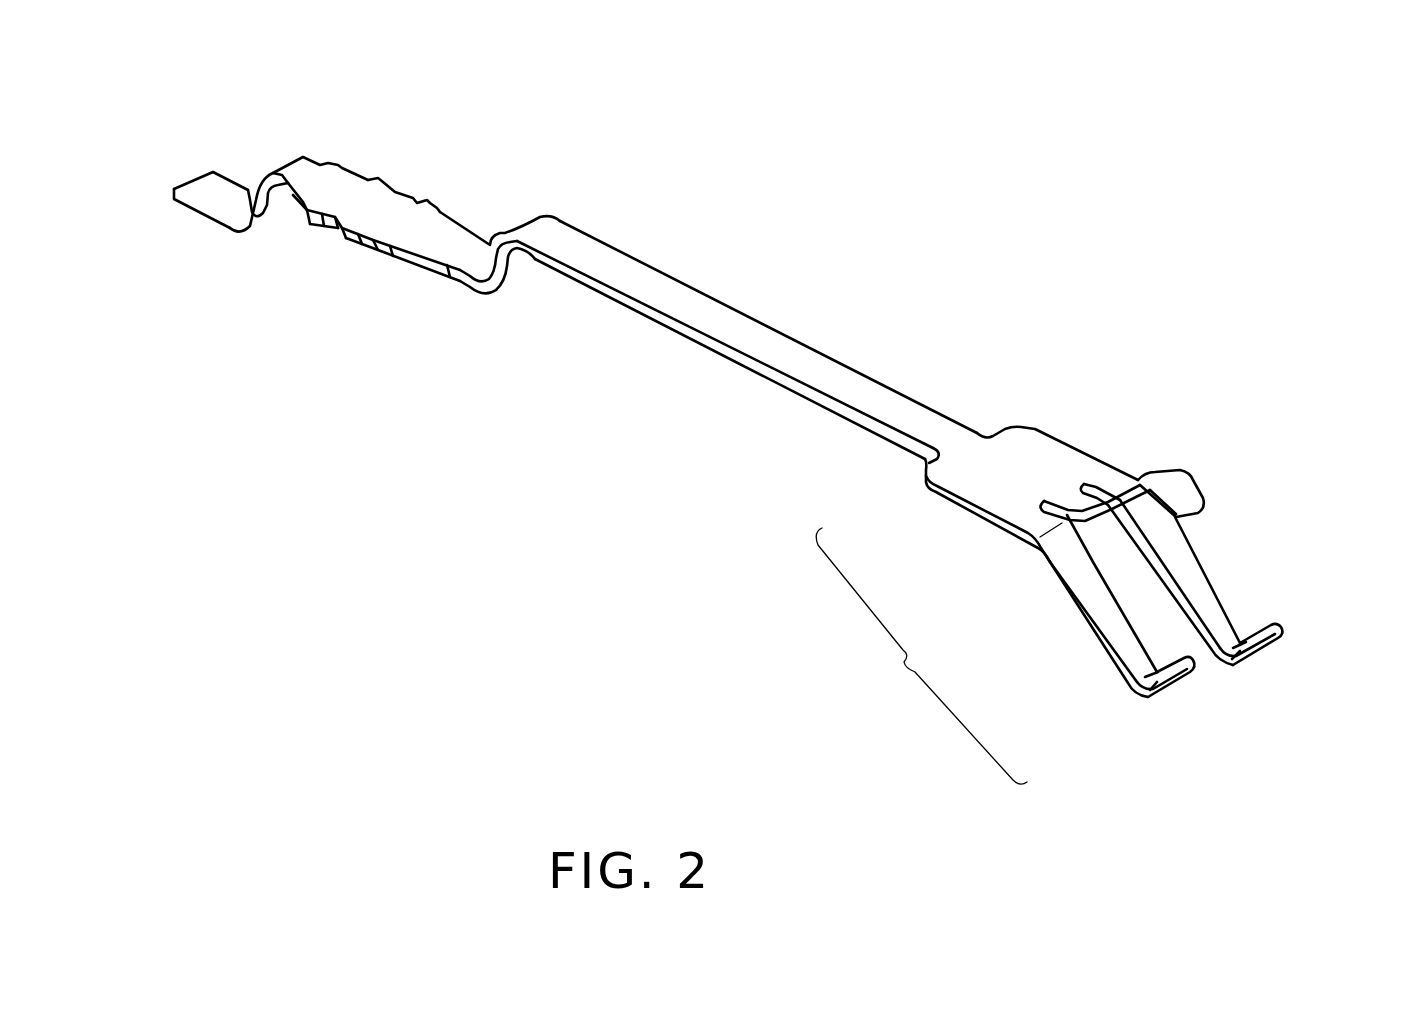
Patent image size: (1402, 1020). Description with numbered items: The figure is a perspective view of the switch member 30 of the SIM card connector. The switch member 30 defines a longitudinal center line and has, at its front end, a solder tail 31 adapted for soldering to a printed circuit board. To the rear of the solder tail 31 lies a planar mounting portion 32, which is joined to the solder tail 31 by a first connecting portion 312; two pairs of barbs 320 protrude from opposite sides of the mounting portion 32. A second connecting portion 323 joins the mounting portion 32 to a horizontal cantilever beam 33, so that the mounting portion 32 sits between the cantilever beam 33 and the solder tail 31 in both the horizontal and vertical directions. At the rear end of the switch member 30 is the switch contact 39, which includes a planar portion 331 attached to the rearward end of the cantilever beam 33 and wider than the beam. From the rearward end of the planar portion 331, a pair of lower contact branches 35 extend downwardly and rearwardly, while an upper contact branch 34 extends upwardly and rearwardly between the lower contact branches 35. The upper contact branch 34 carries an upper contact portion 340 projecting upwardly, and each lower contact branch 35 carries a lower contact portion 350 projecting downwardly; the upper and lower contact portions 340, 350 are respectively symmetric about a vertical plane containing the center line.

The switch member 30 is at (790, 294).
The solder tail 31 is at (207, 212).
The first connecting portion 312 is at (248, 192).
The mounting portion 32 is at (382, 213).
The barbs 320 is at (390, 178).
The second connecting portion 323 is at (495, 255).
The cantilever beam 33 is at (788, 387).
The planar portion 331 is at (1010, 477).
The upper contact branch 34 is at (1152, 492).
The upper contact portion 340 is at (1166, 481).
The lower contact branches 35 is at (1266, 648).
The lower contact portion 350 is at (1147, 687).
The switch contact 39 is at (921, 656).